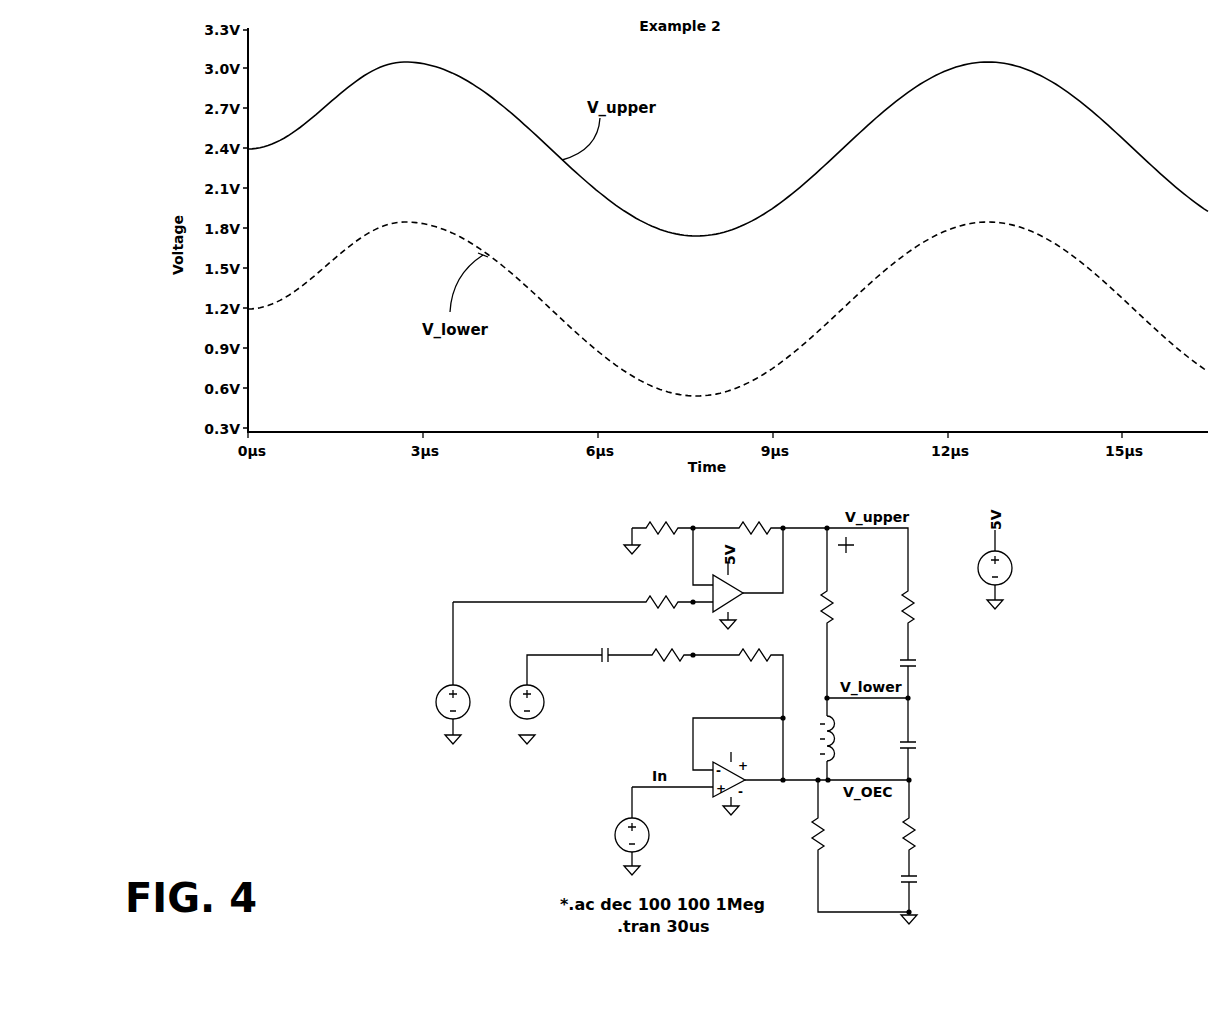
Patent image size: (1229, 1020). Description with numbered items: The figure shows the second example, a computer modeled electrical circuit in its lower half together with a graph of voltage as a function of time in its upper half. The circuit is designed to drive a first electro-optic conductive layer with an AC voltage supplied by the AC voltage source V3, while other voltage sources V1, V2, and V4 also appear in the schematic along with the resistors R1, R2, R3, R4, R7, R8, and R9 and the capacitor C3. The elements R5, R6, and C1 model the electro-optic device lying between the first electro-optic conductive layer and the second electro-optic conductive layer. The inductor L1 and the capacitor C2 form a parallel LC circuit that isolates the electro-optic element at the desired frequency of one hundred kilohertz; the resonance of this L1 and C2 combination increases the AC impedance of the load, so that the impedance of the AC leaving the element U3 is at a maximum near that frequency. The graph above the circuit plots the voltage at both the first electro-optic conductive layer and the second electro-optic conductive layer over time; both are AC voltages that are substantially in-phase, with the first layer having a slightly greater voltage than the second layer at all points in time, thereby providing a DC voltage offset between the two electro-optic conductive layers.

The resistor R1 10k R1 is at (662, 532).
The resistor R2 10k R2 is at (662, 604).
The resistor R3 10k R3 is at (755, 658).
The resistor R4 10k R4 is at (755, 532).
The electro-optic device model element R5 is at (840, 608).
The electro-optic device model element R6 is at (921, 608).
The resistor R7 18 R7 is at (832, 833).
The resistor R8 10 R8 is at (923, 833).
The resistor R9 10k R9 is at (667, 659).
The electro-optic device model element C1 is at (937, 664).
The parallel LC circuit element C2 is at (934, 744).
The capacitor C3 is at (774, 763).
The parallel LC circuit element L1 is at (855, 739).
The element U3 is at (741, 590).
The voltage source V1 1.2V V1 is at (649, 837).
The voltage source V2 5V V2 is at (1005, 572).
The AC voltage V3 is at (583, 705).
The voltage source V4 1.2V V4 is at (469, 705).